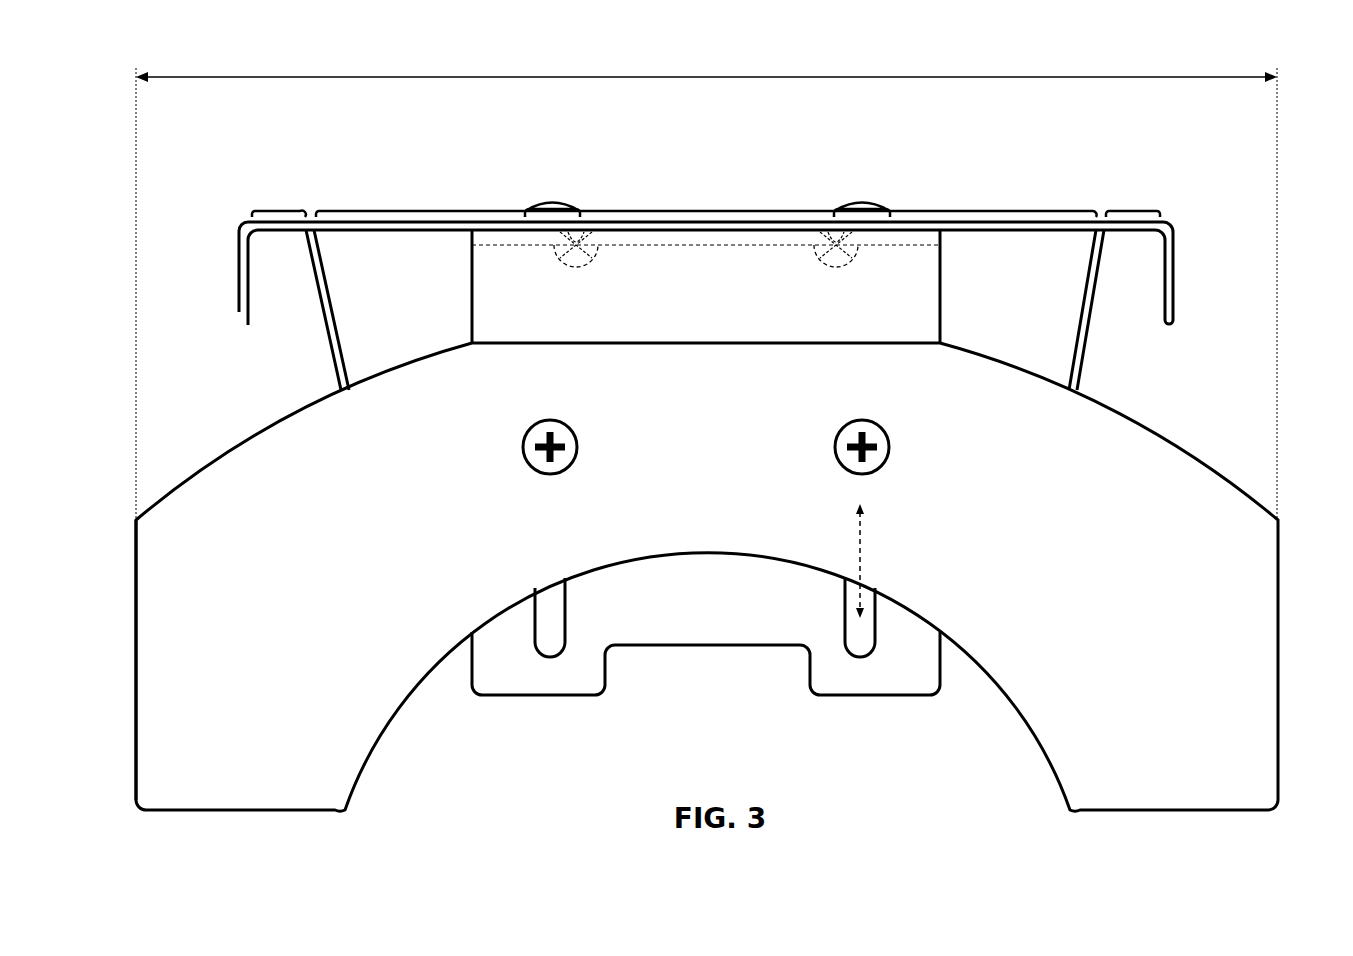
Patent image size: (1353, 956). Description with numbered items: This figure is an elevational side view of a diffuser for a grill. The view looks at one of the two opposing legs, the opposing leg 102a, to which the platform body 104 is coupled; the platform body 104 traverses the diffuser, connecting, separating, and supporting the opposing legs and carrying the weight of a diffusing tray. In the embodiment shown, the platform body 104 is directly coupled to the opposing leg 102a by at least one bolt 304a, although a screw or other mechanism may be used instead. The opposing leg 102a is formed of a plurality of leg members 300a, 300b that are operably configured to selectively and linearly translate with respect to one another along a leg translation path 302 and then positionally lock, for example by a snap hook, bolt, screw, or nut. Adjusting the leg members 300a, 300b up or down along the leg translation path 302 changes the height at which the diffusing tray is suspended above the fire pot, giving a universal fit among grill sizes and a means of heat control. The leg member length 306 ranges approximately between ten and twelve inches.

The opposing leg 102a is at (185, 533).
The platform body 104 is at (1180, 227).
The leg member 300a is at (140, 573).
The leg member 300b is at (572, 265).
The leg translation path 302 is at (862, 555).
The bolt 304a is at (540, 440).
The leg member length 306 is at (706, 280).